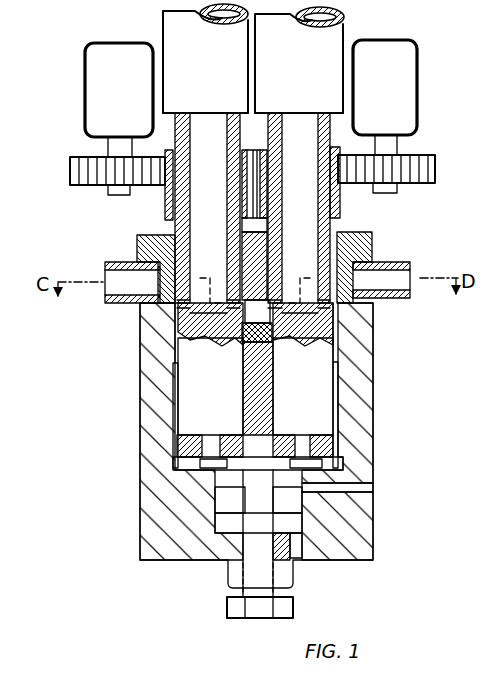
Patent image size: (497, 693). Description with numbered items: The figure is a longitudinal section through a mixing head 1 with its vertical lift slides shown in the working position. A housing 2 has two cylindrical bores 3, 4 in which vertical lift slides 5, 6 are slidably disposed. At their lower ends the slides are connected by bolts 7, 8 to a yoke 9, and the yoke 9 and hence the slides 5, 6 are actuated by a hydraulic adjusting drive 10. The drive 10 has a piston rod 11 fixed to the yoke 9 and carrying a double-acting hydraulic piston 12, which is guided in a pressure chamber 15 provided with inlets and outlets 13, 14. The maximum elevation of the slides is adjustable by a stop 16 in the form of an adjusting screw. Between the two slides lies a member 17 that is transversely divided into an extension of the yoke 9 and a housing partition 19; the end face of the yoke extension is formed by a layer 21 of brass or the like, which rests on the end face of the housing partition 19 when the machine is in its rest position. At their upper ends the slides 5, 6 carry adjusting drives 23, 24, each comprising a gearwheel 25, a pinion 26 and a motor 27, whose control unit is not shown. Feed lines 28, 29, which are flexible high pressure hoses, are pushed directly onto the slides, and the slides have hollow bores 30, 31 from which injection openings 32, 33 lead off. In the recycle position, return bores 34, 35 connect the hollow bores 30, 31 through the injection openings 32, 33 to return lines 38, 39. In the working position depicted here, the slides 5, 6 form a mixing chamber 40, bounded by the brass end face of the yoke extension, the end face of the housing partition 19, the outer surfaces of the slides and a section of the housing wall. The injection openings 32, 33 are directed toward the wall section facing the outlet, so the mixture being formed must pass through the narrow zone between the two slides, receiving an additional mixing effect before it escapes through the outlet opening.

The mixing head 1 is at (141, 546).
The housing 2 is at (148, 527).
The cylindrical bore 3 is at (340, 352).
The cylindrical bore 4 is at (172, 355).
The vertical lift slide 5 is at (318, 377).
The vertical lift slide 6 is at (197, 380).
The bolt 7 is at (305, 432).
The bolt 8 is at (210, 442).
The yoke 9 is at (330, 448).
The adjusting drive 10 is at (295, 605).
The piston rod 11 is at (297, 527).
The double-acting hydraulic piston 12 is at (320, 536).
The inlet and outlet 13 is at (360, 484).
The inlet and outlet 14 is at (293, 562).
The pressure chamber 15 is at (222, 497).
The stop 16 is at (233, 608).
The member 17 is at (273, 402).
The housing partition 19 is at (258, 247).
The layer of brass 21 is at (335, 333).
The adjusting drive 23 is at (415, 150).
The adjusting drive 24 is at (90, 155).
The gearwheel 25 is at (85, 172).
The pinion 26 is at (163, 205).
The motor 27 is at (95, 62).
The feed line 28 is at (328, 42).
The feed line 29 is at (177, 28).
The hollow bore 30 is at (300, 252).
The hollow bore 31 is at (200, 223).
The injection opening 32 is at (373, 305).
The injection opening 33 is at (180, 318).
The return bore 34 is at (343, 278).
The return bore 35 is at (140, 260).
The return line 38 is at (402, 278).
The return line 39 is at (105, 283).
The mixing chamber 40 is at (170, 362).